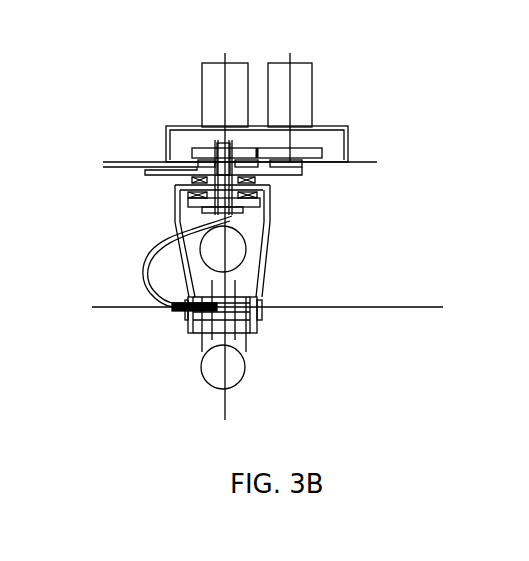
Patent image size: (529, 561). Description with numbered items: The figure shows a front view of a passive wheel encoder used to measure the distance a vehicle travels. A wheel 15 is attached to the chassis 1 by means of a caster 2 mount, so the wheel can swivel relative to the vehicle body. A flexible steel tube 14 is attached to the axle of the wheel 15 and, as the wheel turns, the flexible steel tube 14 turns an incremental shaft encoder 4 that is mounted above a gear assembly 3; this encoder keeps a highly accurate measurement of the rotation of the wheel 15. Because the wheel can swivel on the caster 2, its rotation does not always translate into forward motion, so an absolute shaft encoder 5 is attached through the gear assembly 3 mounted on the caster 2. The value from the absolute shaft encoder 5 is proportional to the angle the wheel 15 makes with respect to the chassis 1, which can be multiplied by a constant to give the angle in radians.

The chassis 1 is at (358, 158).
The caster 2 is at (168, 177).
The gear assembly 3 is at (305, 155).
The incremental shaft encoder 4 is at (202, 90).
The absolute shaft encoder 5 is at (312, 102).
The flexible steel tube 14 is at (137, 262).
The wheel 15 is at (248, 348).